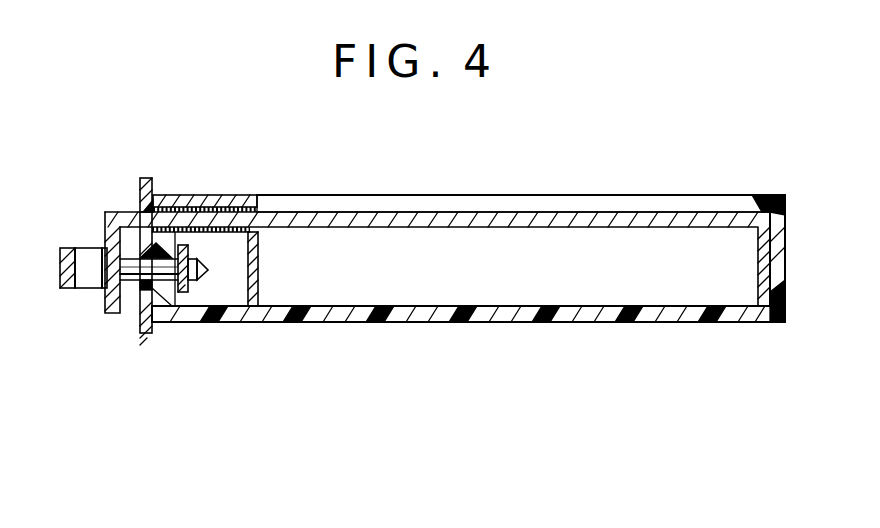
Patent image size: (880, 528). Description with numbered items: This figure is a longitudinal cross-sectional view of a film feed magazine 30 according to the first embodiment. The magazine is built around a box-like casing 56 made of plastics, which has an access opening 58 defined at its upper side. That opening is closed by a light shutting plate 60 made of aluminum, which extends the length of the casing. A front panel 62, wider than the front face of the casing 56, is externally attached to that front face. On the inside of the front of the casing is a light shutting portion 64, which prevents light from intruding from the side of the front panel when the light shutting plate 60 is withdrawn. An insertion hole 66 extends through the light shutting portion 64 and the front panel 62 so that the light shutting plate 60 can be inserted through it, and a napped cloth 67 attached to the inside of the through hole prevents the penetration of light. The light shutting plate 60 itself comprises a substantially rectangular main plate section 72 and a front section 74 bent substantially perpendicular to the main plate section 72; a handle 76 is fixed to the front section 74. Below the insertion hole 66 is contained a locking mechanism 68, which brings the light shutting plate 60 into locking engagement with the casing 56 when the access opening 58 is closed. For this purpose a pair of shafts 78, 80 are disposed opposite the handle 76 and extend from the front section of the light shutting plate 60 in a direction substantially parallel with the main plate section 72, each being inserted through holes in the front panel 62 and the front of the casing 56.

The feed magazine 30 is at (672, 167).
The box-like casing 56 is at (360, 321).
The access opening 58 is at (592, 195).
The light shutting plate 60 is at (498, 218).
The front panel 62 is at (147, 334).
The light shutting portion 64 is at (236, 190).
The insertion hole 66 is at (142, 211).
The napped cloth 67 is at (206, 200).
The locking mechanism 68 is at (193, 292).
The main plate section 72 is at (450, 212).
The front section 74 is at (119, 212).
The handle 76 is at (72, 289).
The shaft 78 is at (131, 281).
The shaft 80 is at (144, 312).